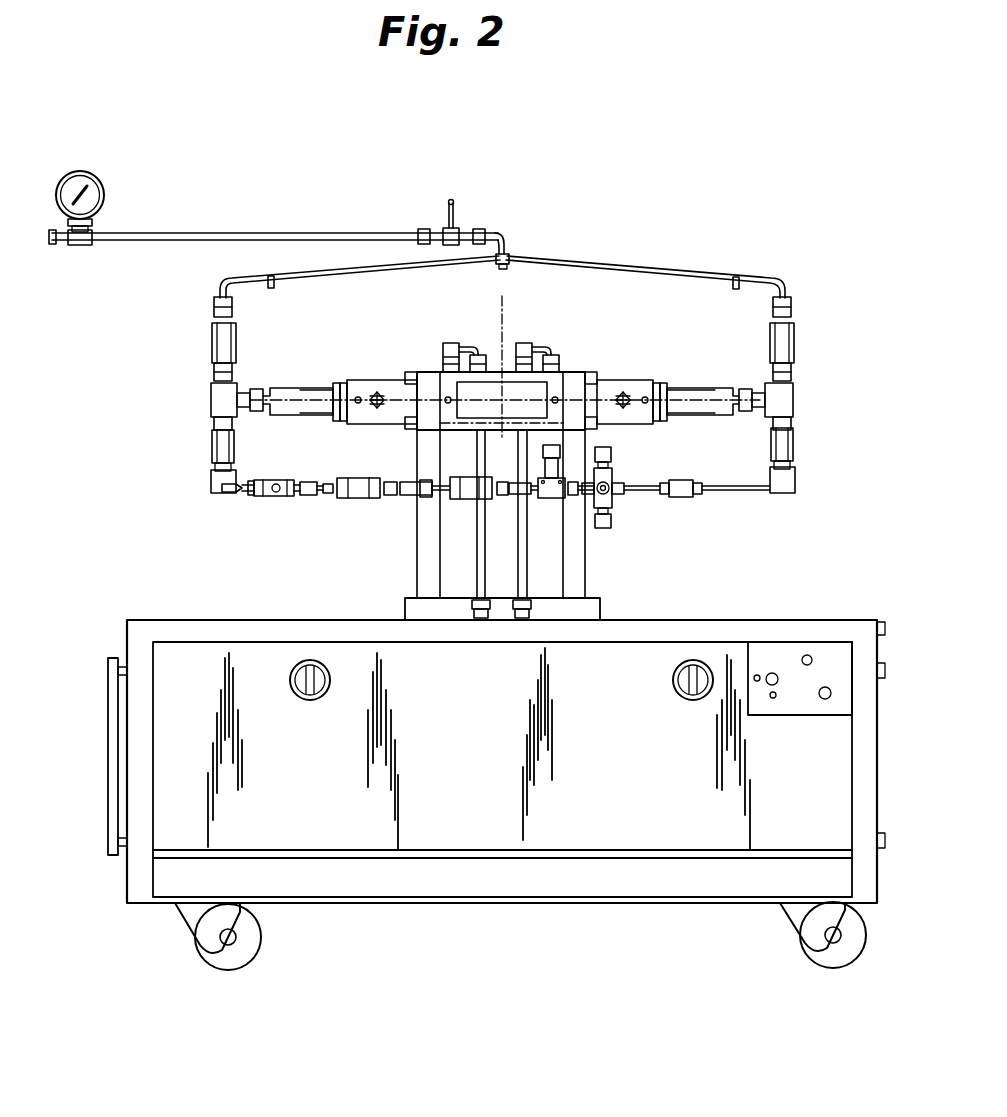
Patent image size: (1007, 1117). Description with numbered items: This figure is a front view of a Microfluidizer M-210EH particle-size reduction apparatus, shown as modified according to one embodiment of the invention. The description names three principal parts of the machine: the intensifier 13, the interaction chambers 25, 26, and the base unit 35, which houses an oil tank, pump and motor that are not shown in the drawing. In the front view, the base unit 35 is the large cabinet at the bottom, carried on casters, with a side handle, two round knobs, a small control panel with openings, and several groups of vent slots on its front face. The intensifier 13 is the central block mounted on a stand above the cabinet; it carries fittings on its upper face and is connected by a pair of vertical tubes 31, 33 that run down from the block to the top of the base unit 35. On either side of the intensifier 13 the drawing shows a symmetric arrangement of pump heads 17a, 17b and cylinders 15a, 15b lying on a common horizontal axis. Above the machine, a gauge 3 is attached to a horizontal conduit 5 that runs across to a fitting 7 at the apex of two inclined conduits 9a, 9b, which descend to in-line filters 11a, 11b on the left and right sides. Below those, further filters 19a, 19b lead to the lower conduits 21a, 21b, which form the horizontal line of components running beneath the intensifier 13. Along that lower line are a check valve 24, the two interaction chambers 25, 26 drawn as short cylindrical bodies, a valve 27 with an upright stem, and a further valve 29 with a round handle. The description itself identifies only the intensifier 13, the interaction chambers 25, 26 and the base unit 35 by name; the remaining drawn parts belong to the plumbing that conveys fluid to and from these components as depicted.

The pressure gauge 3 is at (66, 172).
The supply conduit 5 is at (310, 232).
The connector fitting 7 is at (510, 250).
The inlet conduit 9a is at (223, 284).
The inlet conduit 9b is at (650, 272).
The inlet filter 11a is at (212, 350).
The inlet filter 11b is at (796, 334).
The intensifier 13 is at (479, 333).
The cylinder 15a is at (300, 390).
The cylinder 15b is at (696, 390).
The pump head 17a is at (388, 386).
The pump head 17b is at (626, 388).
The outlet filter 19a is at (212, 456).
The outlet filter 19b is at (794, 442).
The outlet conduit 21a is at (240, 498).
The outlet conduit 21b is at (730, 497).
The check valve 24 is at (276, 500).
The interaction chamber 25 is at (356, 500).
The interaction chamber 26 is at (461, 493).
The valve 27 is at (552, 498).
The shut-off valve 29 is at (606, 498).
The tube 31 is at (481, 572).
The tube 33 is at (522, 572).
The base unit 35 is at (822, 772).